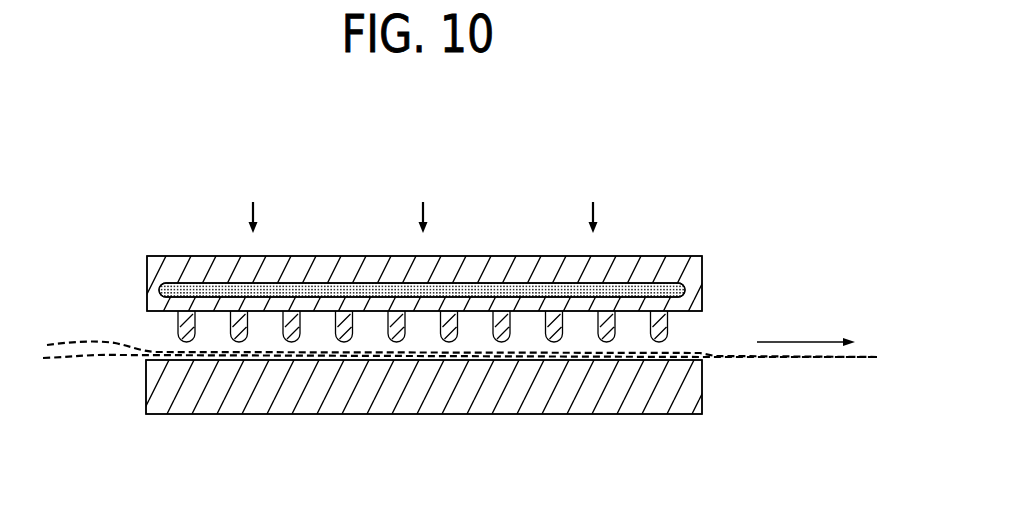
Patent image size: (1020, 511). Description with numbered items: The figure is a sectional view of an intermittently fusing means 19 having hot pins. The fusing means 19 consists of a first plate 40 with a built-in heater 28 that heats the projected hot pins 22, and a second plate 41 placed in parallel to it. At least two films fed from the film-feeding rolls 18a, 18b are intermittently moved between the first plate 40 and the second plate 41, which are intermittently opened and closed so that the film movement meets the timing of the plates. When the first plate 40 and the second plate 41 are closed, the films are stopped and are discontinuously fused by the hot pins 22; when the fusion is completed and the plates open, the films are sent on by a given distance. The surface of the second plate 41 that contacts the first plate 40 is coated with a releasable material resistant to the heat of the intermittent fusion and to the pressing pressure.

The fusing means 19 is at (752, 144).
The first plate 40 is at (683, 268).
The heater 28 is at (609, 285).
The hot pins 22 is at (683, 325).
The second plate 41 is at (702, 390).
The film-feeding roll 18a is at (62, 345).
The film-feeding roll 18b is at (62, 358).